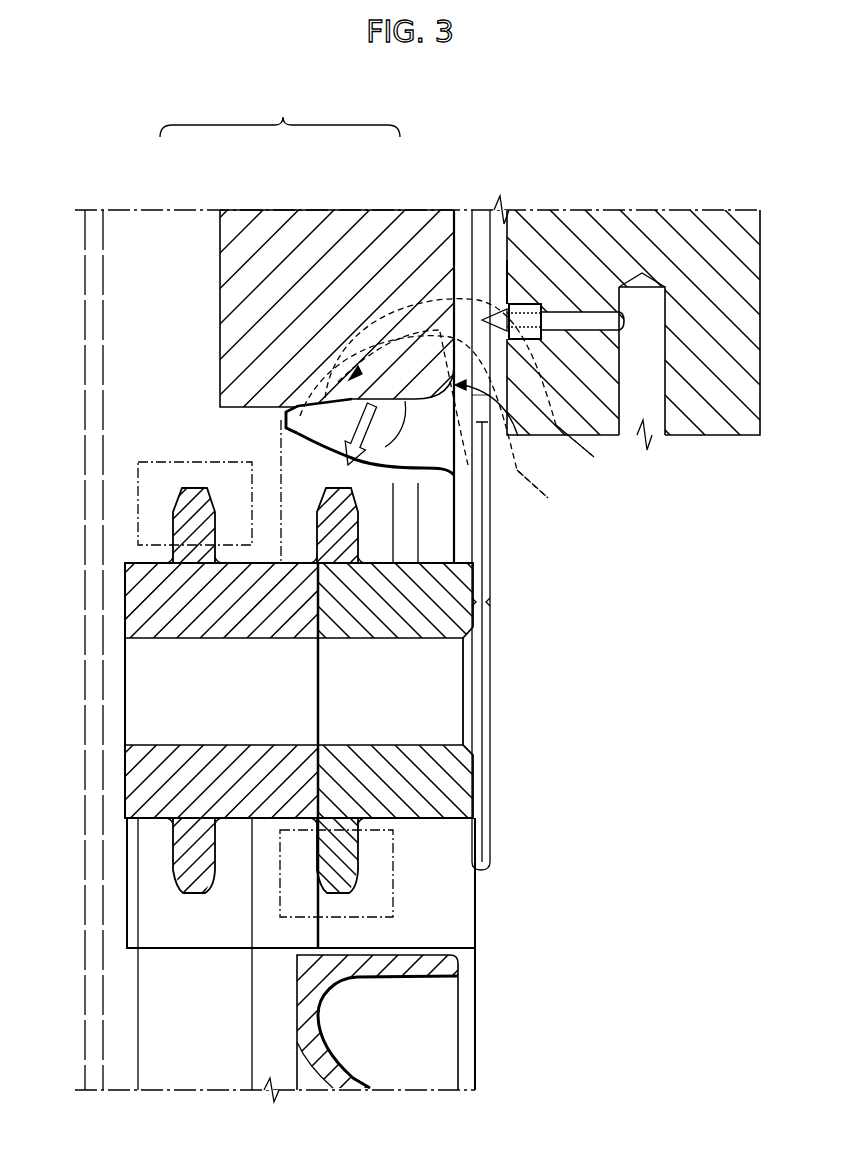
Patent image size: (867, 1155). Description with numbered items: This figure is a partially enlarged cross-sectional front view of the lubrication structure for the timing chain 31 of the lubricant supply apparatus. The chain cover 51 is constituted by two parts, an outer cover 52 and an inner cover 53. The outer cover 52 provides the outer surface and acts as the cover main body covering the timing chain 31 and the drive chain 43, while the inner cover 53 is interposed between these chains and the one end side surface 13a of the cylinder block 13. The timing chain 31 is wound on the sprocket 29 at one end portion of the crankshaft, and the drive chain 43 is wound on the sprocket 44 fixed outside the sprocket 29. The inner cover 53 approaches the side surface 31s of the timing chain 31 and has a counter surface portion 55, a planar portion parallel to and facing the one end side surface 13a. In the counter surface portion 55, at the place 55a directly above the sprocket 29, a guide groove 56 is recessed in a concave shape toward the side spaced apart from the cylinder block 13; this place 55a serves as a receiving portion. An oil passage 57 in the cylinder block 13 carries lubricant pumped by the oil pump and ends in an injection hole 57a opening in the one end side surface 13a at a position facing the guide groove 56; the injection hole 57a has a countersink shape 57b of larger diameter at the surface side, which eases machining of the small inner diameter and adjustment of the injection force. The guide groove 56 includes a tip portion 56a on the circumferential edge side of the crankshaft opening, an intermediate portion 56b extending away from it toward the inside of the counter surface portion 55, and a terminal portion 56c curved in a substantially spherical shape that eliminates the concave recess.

The cylinder block 13 is at (683, 255).
The one end side surface 13a is at (507, 283).
The sprocket 29 is at (432, 790).
The timing chain 31 is at (430, 897).
The side surface 31s is at (480, 853).
The drive chain 43 is at (183, 905).
The sprocket 44 is at (128, 800).
The chain cover 51 is at (280, 114).
The outer cover 52 is at (103, 210).
The inner cover 53 is at (455, 270).
The counter surface portion 55 is at (466, 262).
The place directly above the sprocket 55a is at (500, 398).
The guide groove 56 is at (456, 478).
The tip portion 56a is at (290, 413).
The intermediate portion 56b is at (552, 492).
The terminal portion 56c is at (592, 447).
The oil passage 57 is at (652, 357).
The injection hole 57a is at (585, 313).
The countersink shape 57b is at (517, 305).